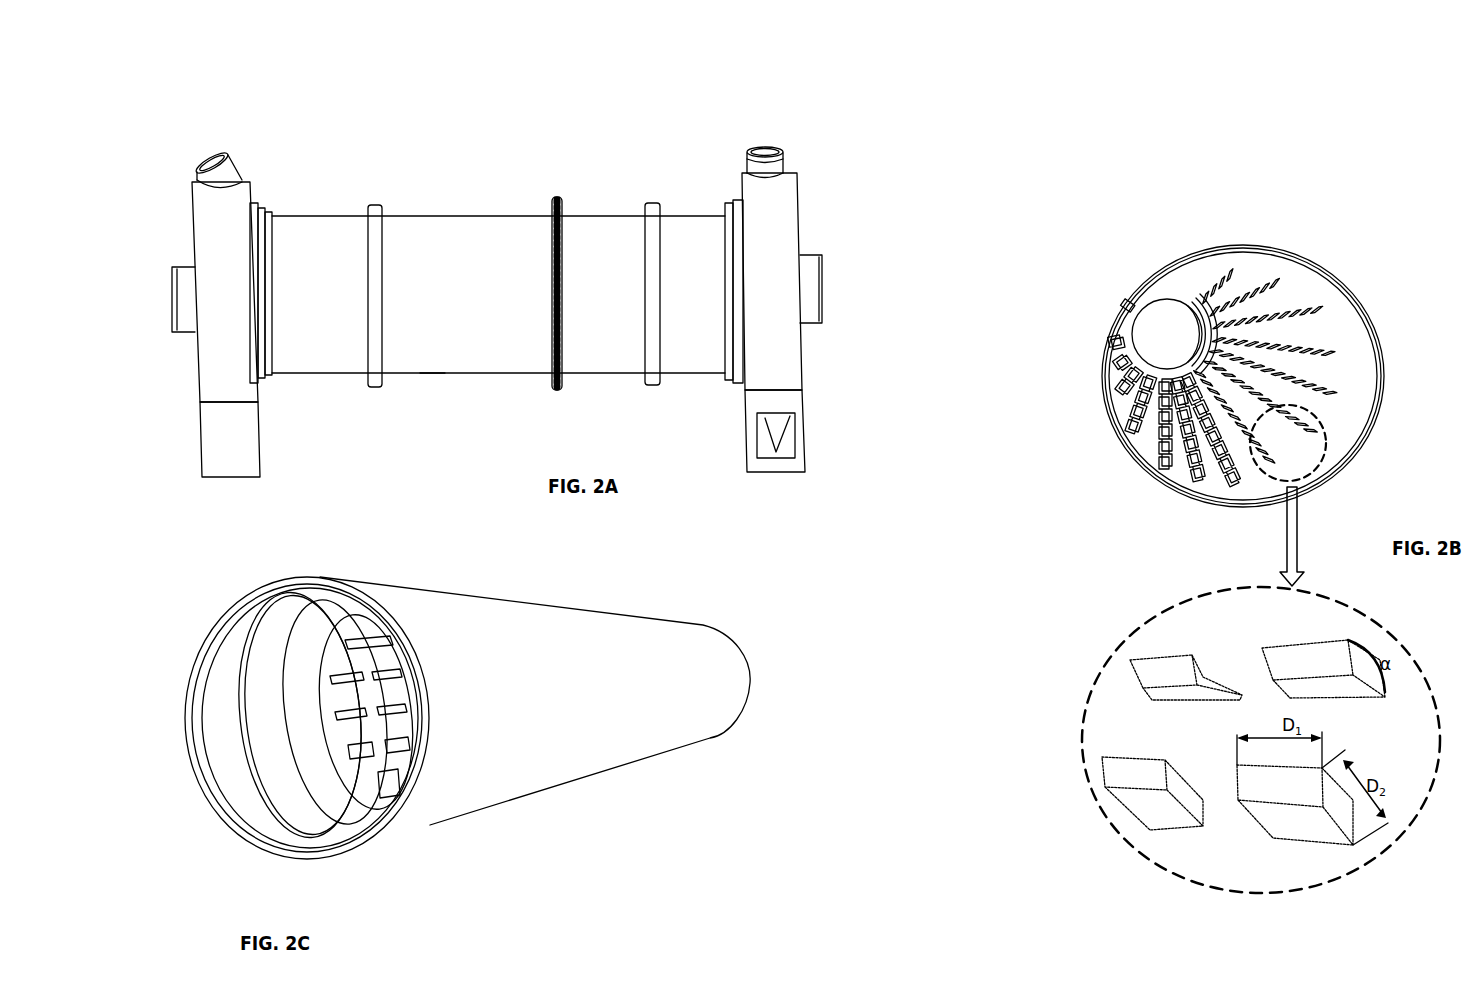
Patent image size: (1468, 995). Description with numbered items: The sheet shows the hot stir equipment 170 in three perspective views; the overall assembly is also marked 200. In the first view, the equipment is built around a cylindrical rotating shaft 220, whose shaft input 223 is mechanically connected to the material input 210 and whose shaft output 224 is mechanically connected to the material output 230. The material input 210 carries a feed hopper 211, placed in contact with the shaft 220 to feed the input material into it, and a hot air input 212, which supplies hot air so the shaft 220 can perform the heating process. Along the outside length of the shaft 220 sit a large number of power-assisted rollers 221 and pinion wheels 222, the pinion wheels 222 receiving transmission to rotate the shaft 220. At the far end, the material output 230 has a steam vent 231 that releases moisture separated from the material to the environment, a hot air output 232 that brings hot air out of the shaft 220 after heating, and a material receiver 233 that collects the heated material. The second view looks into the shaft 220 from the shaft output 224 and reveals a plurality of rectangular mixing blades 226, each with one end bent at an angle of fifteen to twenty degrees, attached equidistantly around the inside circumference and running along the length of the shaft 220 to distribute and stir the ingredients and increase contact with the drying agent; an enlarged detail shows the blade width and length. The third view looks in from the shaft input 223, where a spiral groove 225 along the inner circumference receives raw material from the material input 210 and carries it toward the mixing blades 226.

In FIG. 2A, the reactor system 200 is at (978, 121).
In FIG. 2A, the material input 210 is at (207, 233).
In FIG. 2A, the feed hopper 211 is at (208, 161).
In FIG. 2A, the hot air input 212 is at (180, 300).
In FIG. 2A, the cylindrical rotating shaft 220 is at (465, 232).
In FIG. 2B, the cylindrical rotating shaft 220 is at (1135, 290).
In FIG. 2C, the cylindrical rotating shaft 220 is at (584, 611).
In FIG. 2A, the power-assisted rollers 221 is at (365, 208).
In FIG. 2A, the pinion wheels 222 is at (552, 205).
In FIG. 2A, the shaft input 223 is at (268, 220).
In FIG. 2C, the shaft input 223 is at (188, 710).
In FIG. 2A, the shaft output 224 is at (723, 213).
In FIG. 2B, the shaft output 224 is at (1135, 461).
In FIG. 2C, the spiral groove 225 is at (253, 823).
In FIG. 2B, the mixing blades 226 is at (1228, 476).
In FIG. 2A, the material output 230 is at (788, 198).
In FIG. 2A, the steam vent 231 is at (773, 150).
In FIG. 2A, the hot air output 232 is at (813, 283).
In FIG. 2A, the material receiver 233 is at (787, 442).
In FIG. 2A, the hot stir equipment 170 is at (432, 377).